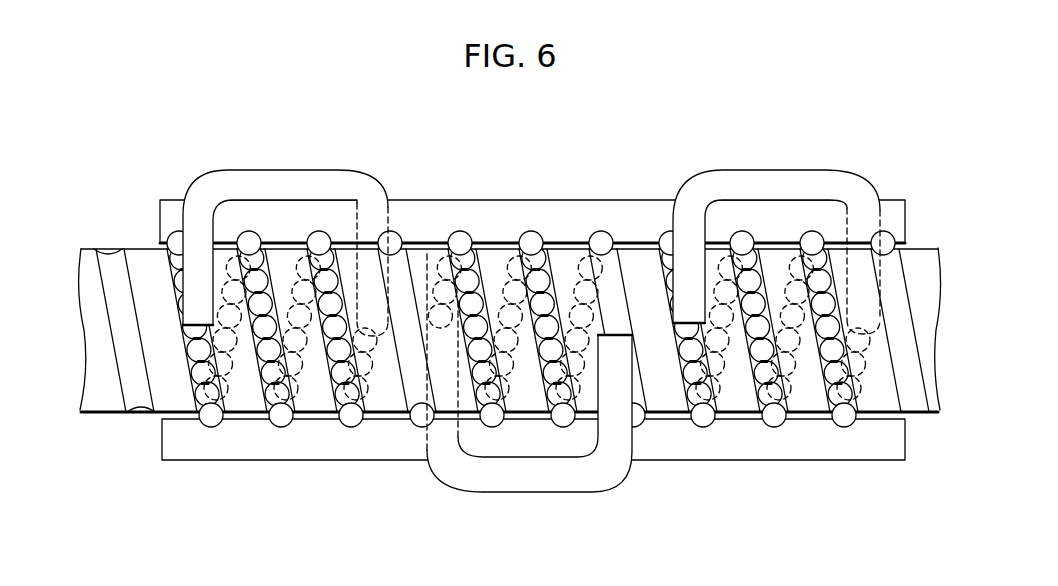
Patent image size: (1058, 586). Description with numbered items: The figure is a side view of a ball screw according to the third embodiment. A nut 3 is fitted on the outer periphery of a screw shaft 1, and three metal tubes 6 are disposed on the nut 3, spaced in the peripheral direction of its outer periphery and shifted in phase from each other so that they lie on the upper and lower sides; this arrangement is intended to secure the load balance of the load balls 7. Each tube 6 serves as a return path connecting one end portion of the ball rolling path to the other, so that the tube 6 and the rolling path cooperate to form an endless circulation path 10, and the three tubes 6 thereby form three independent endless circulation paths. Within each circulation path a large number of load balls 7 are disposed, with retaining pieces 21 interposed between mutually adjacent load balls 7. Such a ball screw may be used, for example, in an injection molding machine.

The screw shaft 1 is at (92, 267).
The nut 3 is at (650, 215).
The tube 6 is at (285, 183).
The load ball 7 is at (337, 276).
The endless circulation path 10 is at (601, 232).
The retaining piece 21 is at (323, 260).